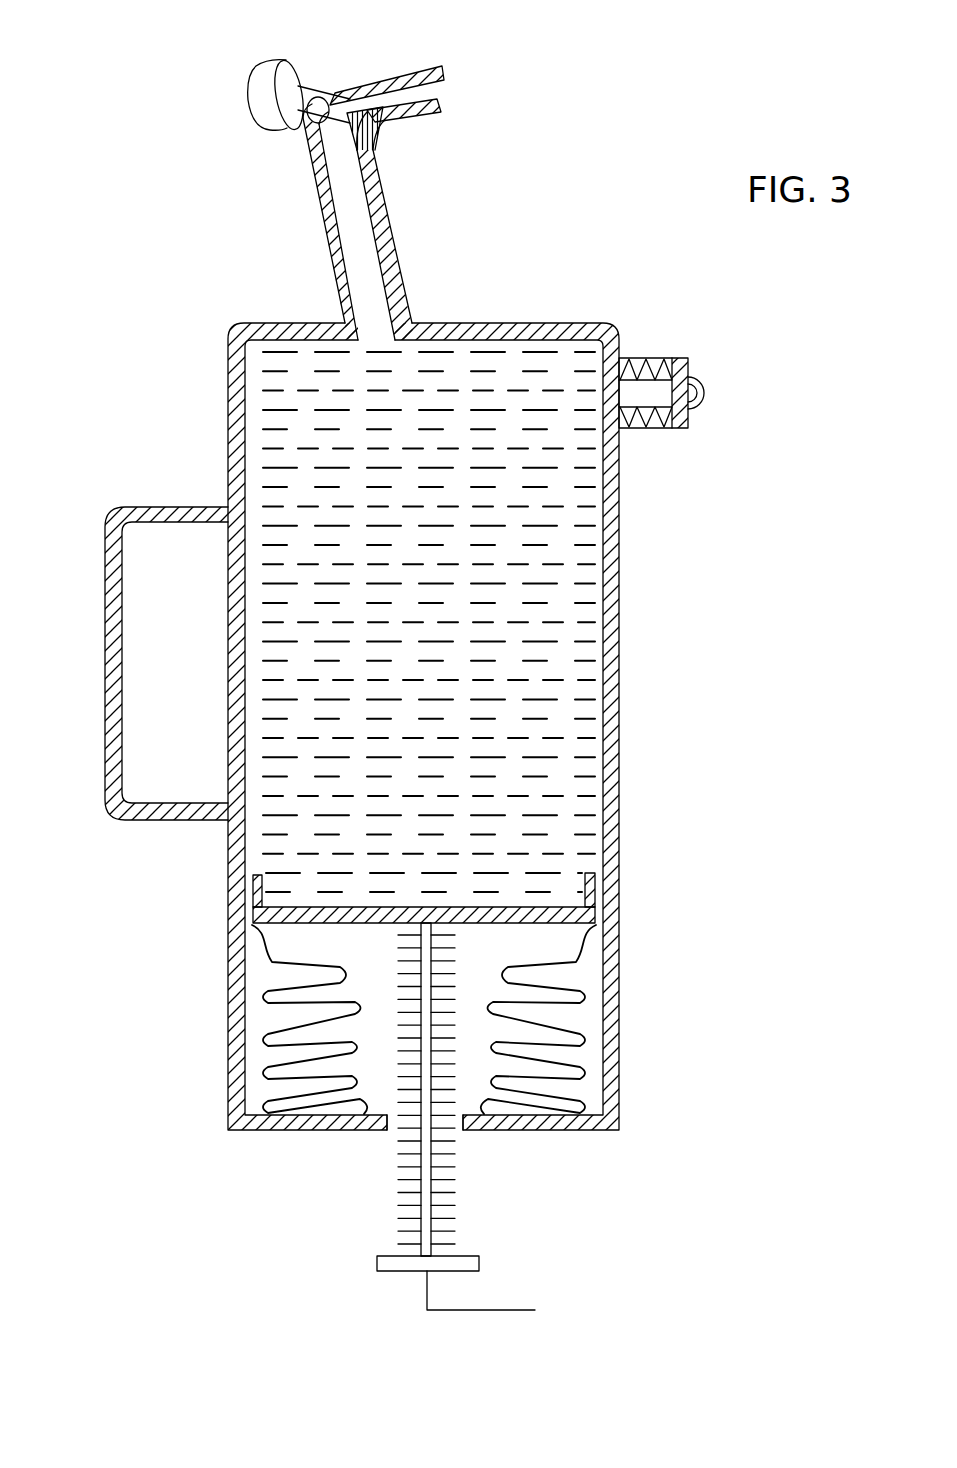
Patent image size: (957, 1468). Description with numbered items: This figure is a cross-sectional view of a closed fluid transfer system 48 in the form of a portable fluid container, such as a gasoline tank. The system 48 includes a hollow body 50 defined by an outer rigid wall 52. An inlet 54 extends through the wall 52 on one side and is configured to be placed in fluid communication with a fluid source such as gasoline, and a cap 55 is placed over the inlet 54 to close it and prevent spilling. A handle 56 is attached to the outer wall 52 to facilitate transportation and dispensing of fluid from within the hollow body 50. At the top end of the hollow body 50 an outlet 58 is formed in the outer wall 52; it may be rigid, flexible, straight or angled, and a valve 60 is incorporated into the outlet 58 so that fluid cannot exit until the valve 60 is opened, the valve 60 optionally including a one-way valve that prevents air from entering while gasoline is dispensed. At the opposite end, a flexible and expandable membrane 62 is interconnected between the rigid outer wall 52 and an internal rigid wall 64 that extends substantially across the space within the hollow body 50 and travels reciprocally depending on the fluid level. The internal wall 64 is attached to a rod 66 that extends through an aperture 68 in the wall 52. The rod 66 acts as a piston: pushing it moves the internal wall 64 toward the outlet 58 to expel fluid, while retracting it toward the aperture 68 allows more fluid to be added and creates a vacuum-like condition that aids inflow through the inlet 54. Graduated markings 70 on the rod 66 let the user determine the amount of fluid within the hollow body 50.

The closed fluid transfer system 48 is at (90, 279).
The hollow body 50 is at (479, 726).
The outer rigid wall 52 is at (620, 660).
The inlet 54 is at (660, 358).
The cap 55 is at (712, 393).
The handle 56 is at (105, 655).
The outlet 58 is at (395, 248).
The valve 60 is at (287, 62).
The flexible and expandable membrane 62 is at (258, 1000).
The internal rigid wall 64 is at (303, 905).
The rod 66 is at (457, 1270).
The aperture 68 is at (455, 1118).
The graduated markings 70 is at (460, 1207).